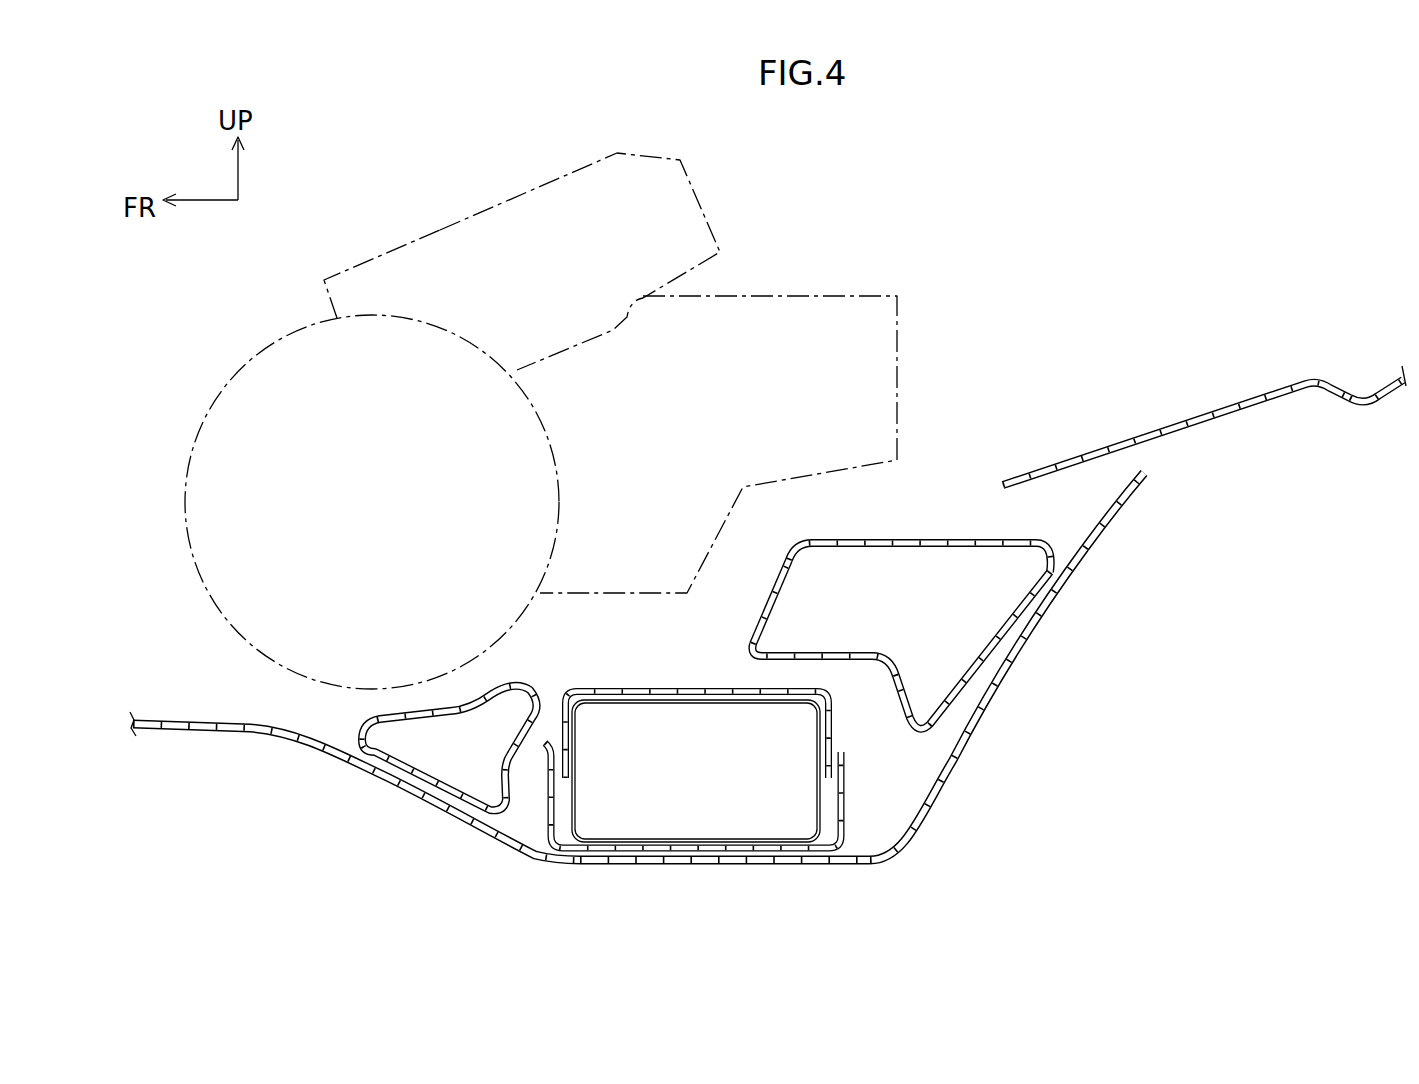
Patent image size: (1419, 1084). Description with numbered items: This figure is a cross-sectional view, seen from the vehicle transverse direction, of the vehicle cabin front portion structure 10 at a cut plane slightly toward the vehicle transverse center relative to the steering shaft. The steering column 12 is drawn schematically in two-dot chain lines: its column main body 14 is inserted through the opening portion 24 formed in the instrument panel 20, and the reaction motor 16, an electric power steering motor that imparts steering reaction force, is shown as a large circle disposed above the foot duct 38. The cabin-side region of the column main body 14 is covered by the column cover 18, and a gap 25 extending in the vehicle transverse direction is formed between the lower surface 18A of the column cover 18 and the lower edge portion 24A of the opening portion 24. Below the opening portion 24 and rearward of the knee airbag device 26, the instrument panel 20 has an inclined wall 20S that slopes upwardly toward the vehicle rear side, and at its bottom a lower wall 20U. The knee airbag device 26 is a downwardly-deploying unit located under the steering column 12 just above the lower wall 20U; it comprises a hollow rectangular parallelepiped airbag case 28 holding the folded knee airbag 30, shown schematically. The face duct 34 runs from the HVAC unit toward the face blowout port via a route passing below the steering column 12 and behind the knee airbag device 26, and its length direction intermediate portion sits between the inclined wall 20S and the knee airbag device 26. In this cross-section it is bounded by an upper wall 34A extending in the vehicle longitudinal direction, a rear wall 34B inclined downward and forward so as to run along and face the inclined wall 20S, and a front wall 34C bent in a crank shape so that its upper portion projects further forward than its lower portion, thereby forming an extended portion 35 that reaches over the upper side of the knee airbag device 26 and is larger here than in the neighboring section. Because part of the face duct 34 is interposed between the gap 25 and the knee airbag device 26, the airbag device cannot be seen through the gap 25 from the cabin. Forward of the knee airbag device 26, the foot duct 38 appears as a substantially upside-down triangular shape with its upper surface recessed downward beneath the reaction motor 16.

The vehicle cabin front portion structure 10 is at (1027, 242).
The steering column 12 is at (345, 233).
The column main body 14 is at (500, 193).
The reaction motor 16 is at (218, 385).
The column cover 18 is at (1300, 398).
The lower surface 18A is at (1223, 417).
The instrument panel 20 is at (960, 770).
The inclined wall 20S is at (1080, 567).
The lower wall 20U is at (730, 866).
The opening portion 24 is at (1294, 593).
The lower edge portion 24A is at (1157, 472).
The gap 25 is at (1153, 458).
The knee airbag device 26 is at (630, 686).
The airbag case 28 is at (692, 698).
The knee airbag 30 is at (650, 833).
The face duct 34 is at (865, 535).
The upper wall 34A is at (957, 536).
The rear wall 34B is at (982, 670).
The front wall 34C is at (847, 650).
The extended portion 35 is at (763, 590).
The foot duct 38 is at (425, 715).